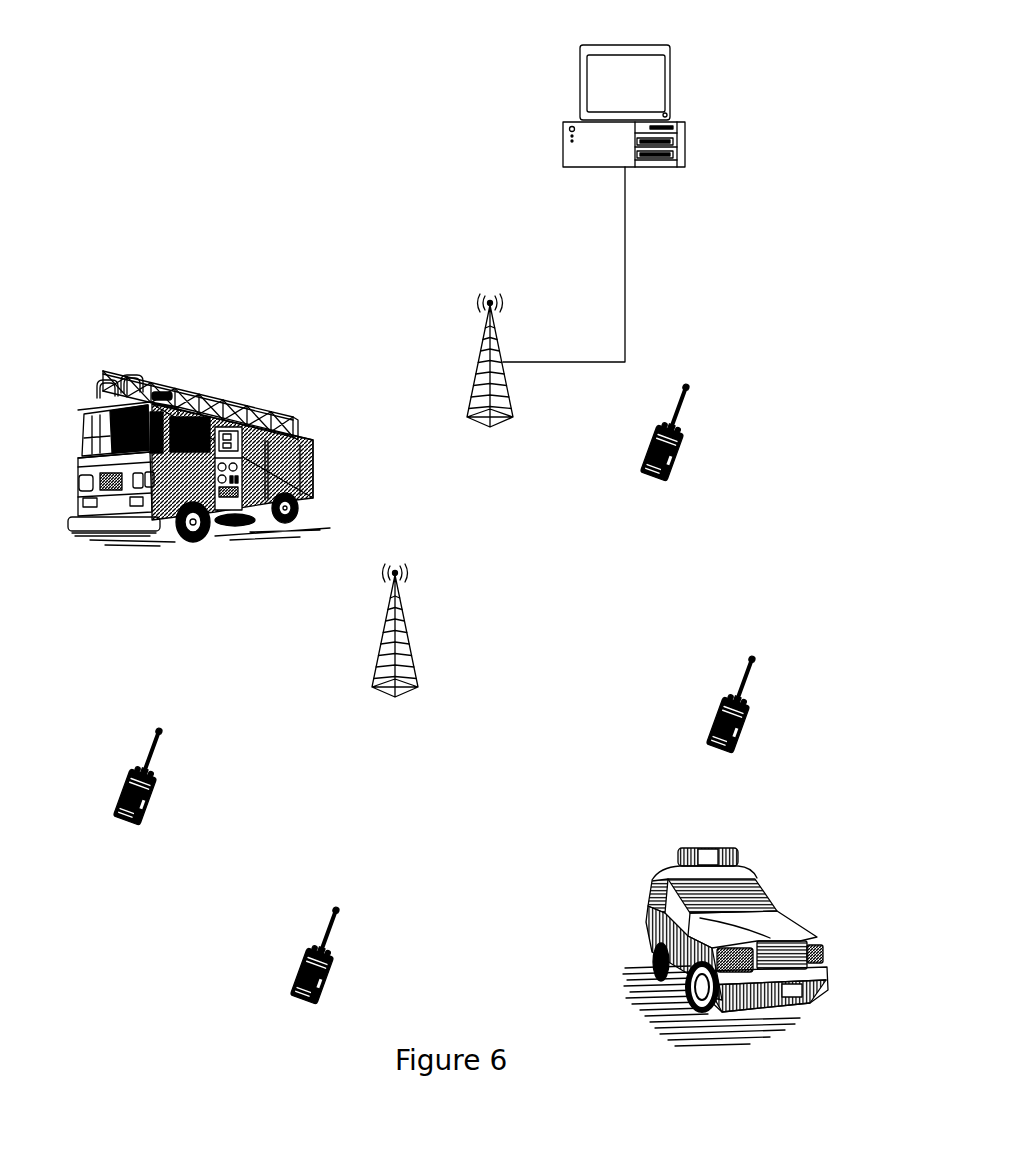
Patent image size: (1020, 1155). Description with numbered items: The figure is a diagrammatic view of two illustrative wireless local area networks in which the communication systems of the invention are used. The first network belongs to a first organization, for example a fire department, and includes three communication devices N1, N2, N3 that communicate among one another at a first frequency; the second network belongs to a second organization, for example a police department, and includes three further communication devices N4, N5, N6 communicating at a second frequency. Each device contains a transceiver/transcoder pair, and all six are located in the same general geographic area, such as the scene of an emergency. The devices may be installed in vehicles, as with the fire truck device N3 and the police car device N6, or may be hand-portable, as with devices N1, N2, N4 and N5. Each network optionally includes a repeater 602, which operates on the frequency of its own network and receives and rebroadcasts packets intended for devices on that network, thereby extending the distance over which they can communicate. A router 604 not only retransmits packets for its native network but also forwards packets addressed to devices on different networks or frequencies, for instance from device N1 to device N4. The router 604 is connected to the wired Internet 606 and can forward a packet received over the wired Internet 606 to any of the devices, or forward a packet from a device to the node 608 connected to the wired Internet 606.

The repeater 602 is at (410, 648).
The router 604 is at (478, 295).
The wired Internet 606 is at (626, 272).
The node connected to the wired Internet 608 is at (687, 143).
The communication device N1 is at (122, 820).
The communication device N2 is at (743, 728).
The communication device N3 is at (132, 370).
The communication device N4 is at (677, 455).
The communication device N5 is at (298, 1000).
The communication device N6 is at (743, 865).